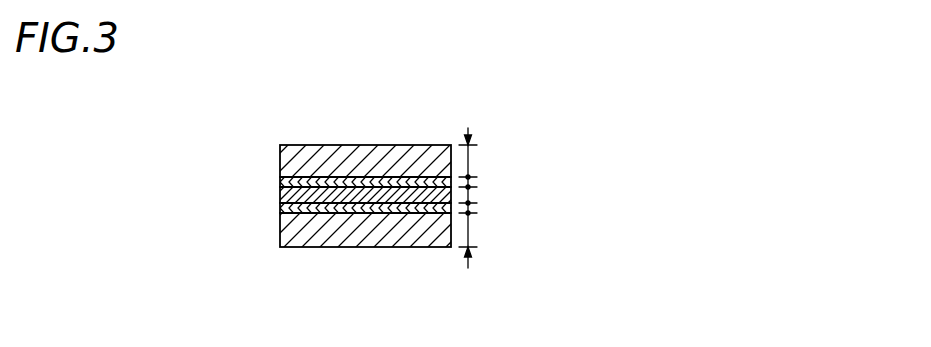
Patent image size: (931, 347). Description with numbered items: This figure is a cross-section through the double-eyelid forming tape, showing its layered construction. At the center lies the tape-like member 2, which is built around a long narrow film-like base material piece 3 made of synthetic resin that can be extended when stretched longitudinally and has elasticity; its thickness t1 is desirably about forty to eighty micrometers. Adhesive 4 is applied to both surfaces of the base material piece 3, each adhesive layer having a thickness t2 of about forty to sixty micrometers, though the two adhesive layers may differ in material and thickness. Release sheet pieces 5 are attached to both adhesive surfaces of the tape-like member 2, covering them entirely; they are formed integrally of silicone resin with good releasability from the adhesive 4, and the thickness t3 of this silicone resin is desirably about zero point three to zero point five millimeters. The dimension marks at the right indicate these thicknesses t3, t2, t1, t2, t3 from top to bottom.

The tape-like member 2 is at (218, 152).
The base material piece 3 is at (280, 195).
The adhesive 4 is at (280, 182).
The release sheet piece 5 is at (352, 152).
The thickness of the base material piece t1 is at (470, 195).
The thickness of the adhesive t2 is at (470, 182).
The thickness of the silicone resin t3 is at (470, 162).